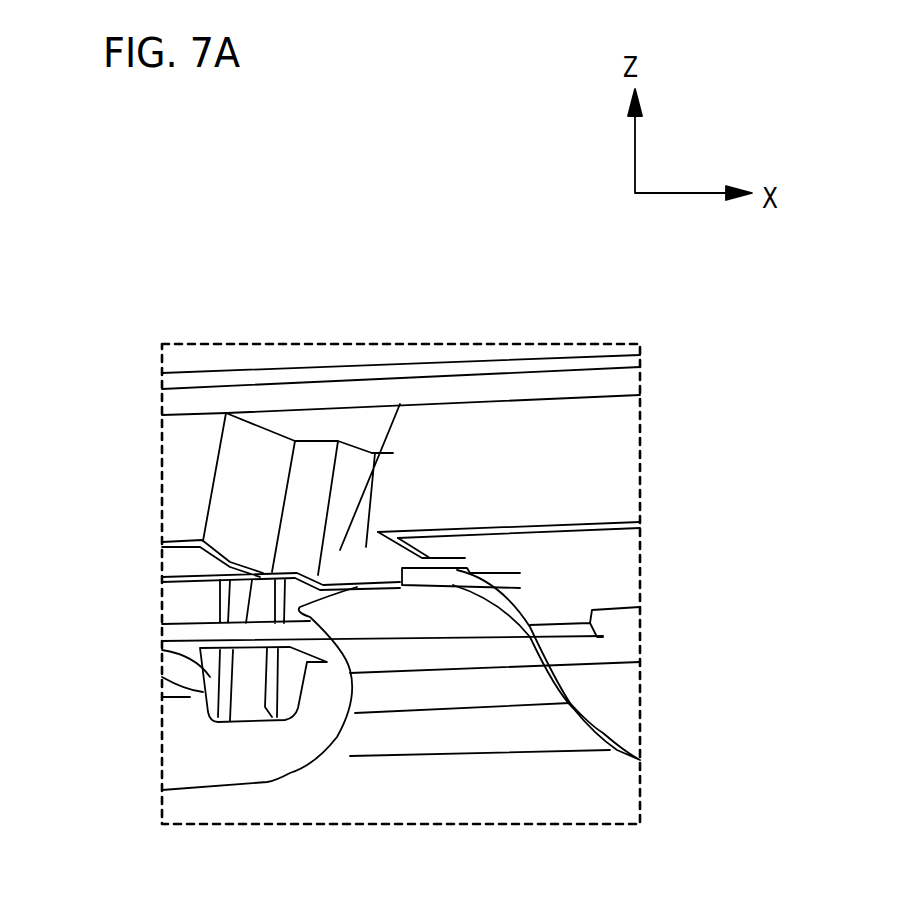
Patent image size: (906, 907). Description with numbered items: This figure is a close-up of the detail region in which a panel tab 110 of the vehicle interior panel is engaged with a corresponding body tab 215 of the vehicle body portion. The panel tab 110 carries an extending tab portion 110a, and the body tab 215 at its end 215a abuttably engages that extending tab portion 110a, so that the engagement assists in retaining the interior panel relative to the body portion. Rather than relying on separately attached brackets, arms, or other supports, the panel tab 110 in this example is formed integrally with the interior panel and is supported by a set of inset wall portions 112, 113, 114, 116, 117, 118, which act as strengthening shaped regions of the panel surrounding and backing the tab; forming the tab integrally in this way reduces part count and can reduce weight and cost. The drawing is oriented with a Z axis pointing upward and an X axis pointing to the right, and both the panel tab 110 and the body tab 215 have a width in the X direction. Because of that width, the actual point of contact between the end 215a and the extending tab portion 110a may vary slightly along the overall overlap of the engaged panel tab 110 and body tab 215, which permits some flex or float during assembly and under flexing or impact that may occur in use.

The panel tab 110 is at (378, 532).
The extending tab portion 110a is at (357, 587).
The inset wall portion 112 is at (238, 489).
The inset wall portion 113 is at (312, 470).
The inset wall portion 114 is at (355, 468).
The inset wall portion 116 is at (432, 550).
The inset wall portion 117 is at (412, 562).
The inset wall portion 118 is at (395, 572).
The body tab 215 is at (422, 686).
The end of body tab 215a is at (437, 583).